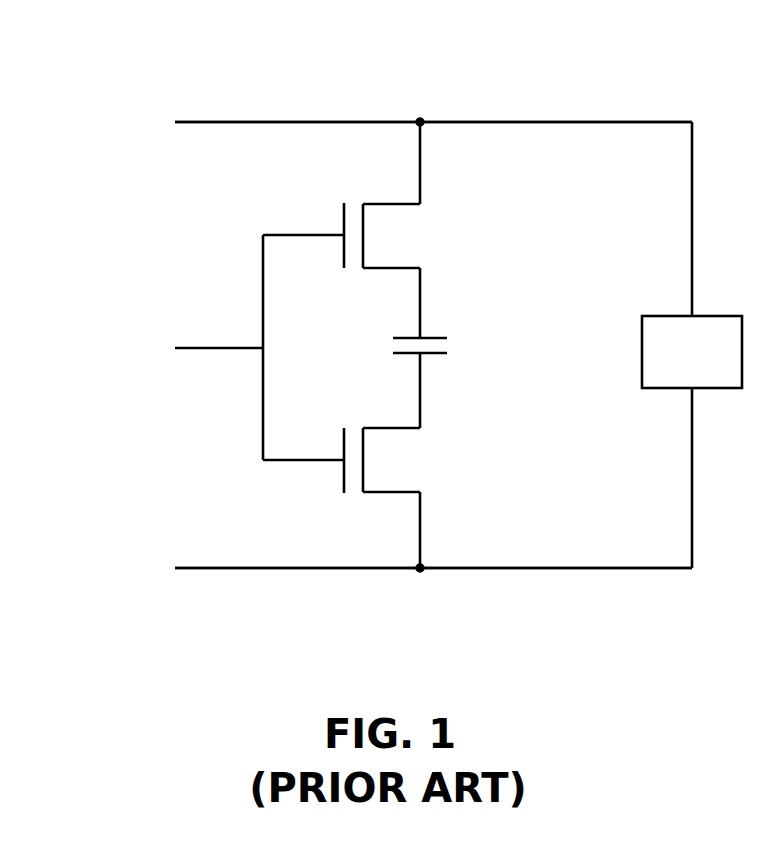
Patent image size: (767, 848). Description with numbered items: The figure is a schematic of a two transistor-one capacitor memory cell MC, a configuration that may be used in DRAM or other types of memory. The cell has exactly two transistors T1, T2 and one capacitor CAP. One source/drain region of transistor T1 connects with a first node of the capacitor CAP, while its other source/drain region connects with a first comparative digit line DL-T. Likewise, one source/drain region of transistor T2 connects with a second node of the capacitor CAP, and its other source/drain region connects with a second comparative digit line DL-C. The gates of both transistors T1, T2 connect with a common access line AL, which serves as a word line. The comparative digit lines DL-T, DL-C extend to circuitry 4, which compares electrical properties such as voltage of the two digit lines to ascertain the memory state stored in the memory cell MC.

The memory cell MC is at (183, 95).
The second comparative digit line DL-C is at (519, 122).
The first comparative digit line DL-T is at (519, 568).
The access line AL is at (239, 347).
The transistor T2 is at (382, 235).
The transistor T1 is at (382, 460).
The capacitor CAP is at (455, 345).
The circuitry 4 is at (692, 352).